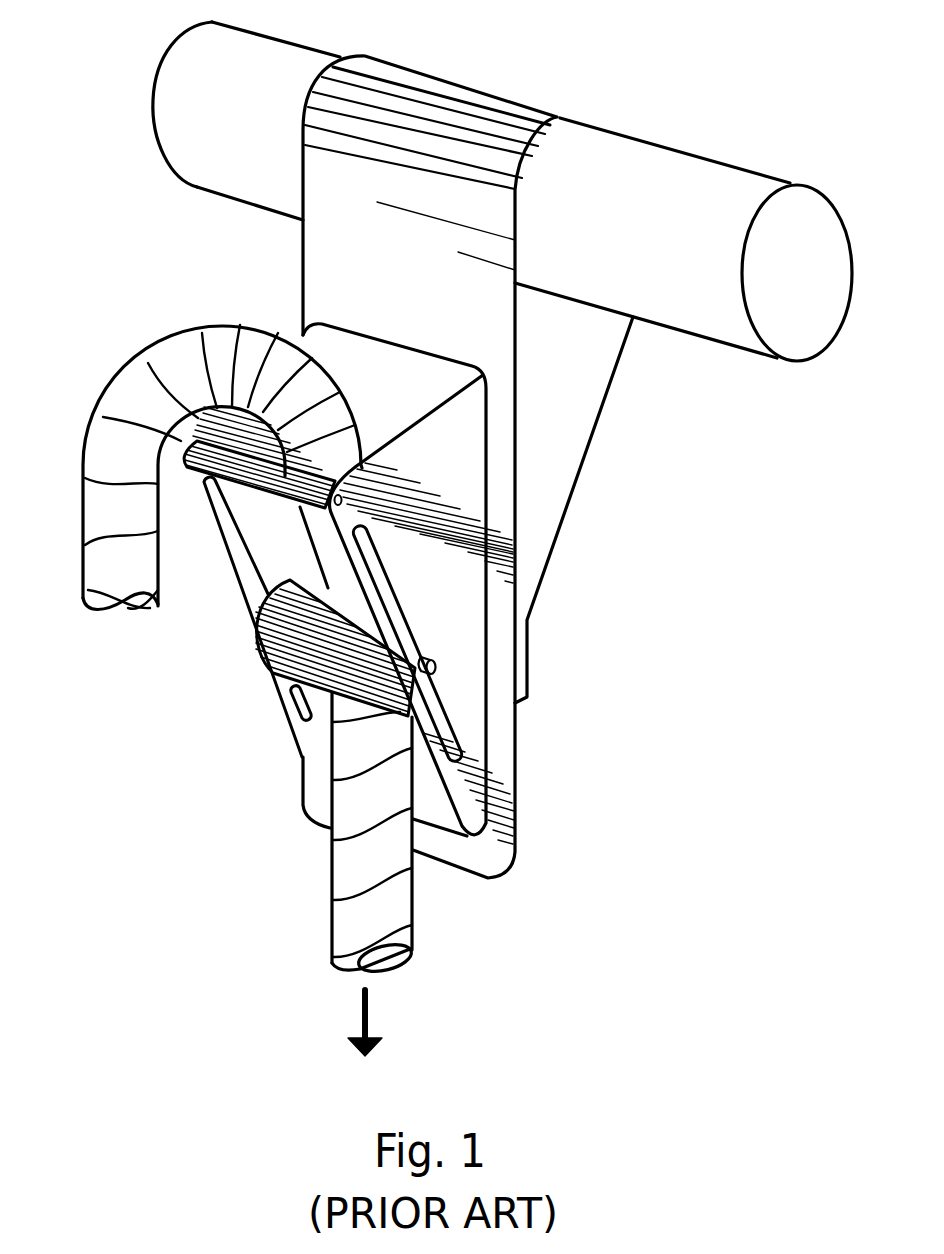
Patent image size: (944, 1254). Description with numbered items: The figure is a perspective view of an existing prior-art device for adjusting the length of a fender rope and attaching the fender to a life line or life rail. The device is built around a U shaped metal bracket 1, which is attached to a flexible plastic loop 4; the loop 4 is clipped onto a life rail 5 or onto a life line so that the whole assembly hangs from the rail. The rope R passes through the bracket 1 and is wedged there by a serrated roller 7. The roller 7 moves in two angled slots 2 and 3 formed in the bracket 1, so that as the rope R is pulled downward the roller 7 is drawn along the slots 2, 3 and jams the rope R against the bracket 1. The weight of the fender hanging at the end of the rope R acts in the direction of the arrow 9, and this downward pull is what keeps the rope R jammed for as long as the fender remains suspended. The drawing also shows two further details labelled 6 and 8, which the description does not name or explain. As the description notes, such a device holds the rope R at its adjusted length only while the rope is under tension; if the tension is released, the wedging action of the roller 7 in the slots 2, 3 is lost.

The U shaped metal bracket 1 is at (388, 338).
The angled slot 2 is at (393, 592).
The angled slot 3 is at (237, 570).
The flexible plastic loop 4 is at (467, 100).
The life rail 5 is at (735, 347).
The rivet 6 is at (437, 665).
The serrated roller 7 is at (290, 690).
The upper bolt 8 is at (205, 470).
The arrow 9 is at (370, 1014).
The rope R is at (117, 393).